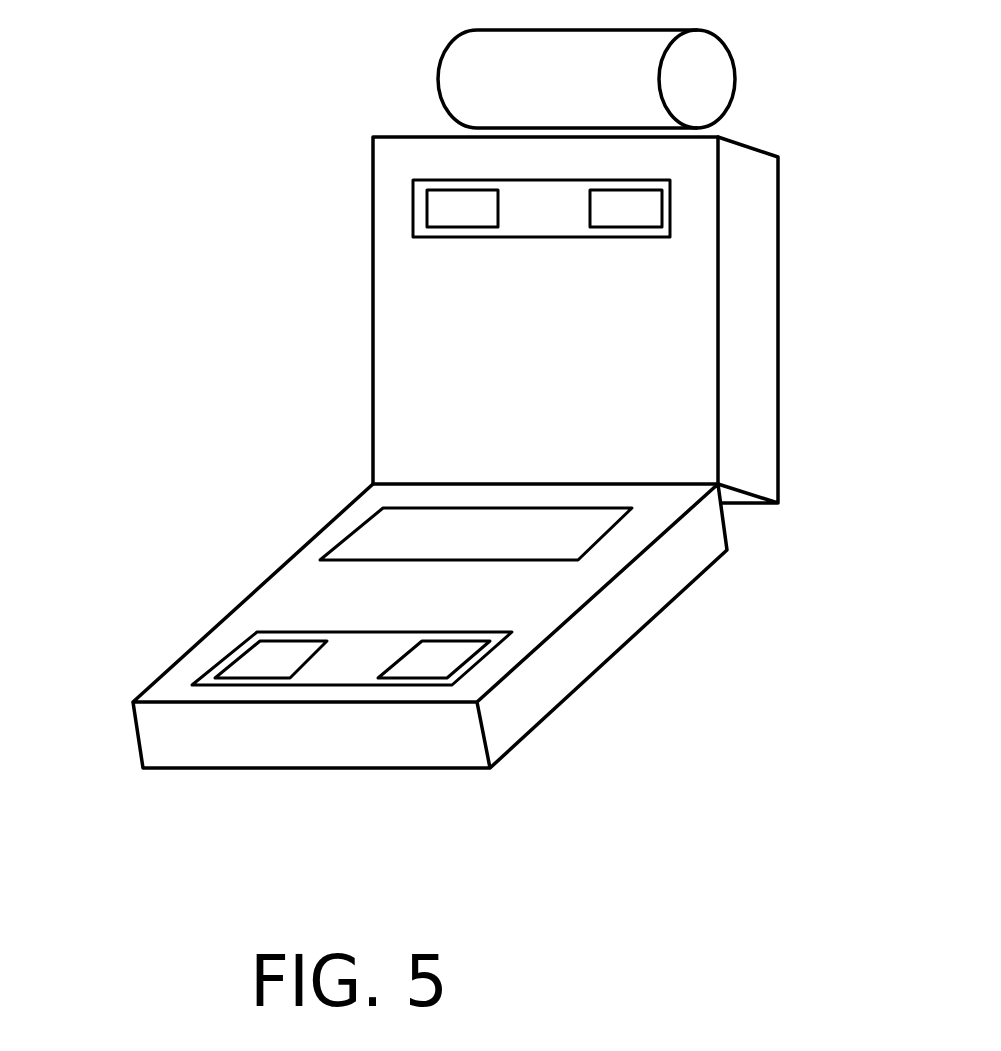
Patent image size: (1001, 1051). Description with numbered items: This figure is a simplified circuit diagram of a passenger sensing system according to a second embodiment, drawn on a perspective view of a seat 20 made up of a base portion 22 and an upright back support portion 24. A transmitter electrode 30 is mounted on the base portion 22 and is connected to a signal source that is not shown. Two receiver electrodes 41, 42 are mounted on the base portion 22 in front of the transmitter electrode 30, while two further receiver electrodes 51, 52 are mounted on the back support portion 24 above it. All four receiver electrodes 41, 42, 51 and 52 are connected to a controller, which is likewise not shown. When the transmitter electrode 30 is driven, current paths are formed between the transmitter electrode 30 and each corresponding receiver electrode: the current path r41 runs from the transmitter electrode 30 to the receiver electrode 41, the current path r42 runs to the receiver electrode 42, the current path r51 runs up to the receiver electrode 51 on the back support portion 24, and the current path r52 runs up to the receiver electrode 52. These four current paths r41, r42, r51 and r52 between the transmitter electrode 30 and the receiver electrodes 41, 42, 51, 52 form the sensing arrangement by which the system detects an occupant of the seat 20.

The seat 20 is at (370, 375).
The base portion 22 is at (563, 698).
The back support portion 24 is at (778, 365).
The transmitter electrode 30 is at (358, 542).
The receiver electrode 41 is at (267, 670).
The receiver electrode 42 is at (417, 672).
The receiver electrode 51 is at (447, 210).
The receiver electrode 52 is at (658, 205).
The current path r51 is at (460, 203).
The current path r52 is at (617, 203).
The current path r41 is at (400, 535).
The current path r42 is at (557, 535).